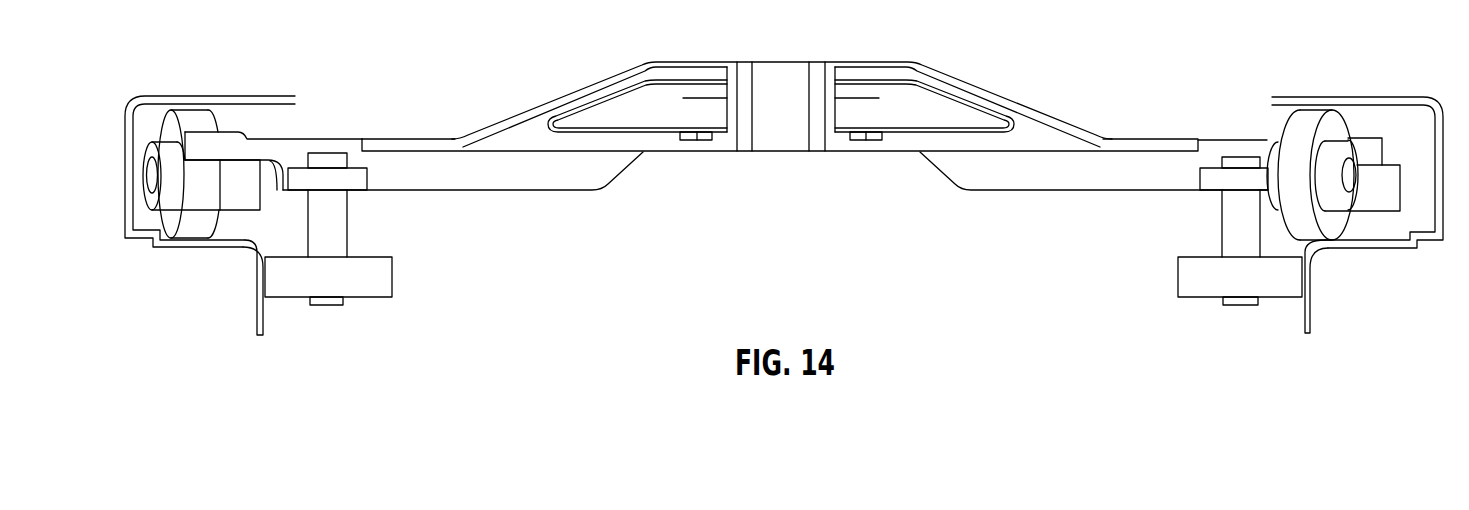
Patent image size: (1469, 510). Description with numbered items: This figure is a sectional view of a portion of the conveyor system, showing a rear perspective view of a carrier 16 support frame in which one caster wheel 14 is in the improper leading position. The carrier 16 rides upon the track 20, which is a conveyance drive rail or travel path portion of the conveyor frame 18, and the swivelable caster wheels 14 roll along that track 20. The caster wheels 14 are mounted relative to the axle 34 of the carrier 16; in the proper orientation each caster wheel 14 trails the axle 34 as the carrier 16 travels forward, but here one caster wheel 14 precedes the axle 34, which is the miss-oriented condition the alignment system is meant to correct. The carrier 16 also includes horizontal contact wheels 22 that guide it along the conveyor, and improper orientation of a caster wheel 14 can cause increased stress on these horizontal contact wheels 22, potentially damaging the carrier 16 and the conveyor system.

The caster wheel 14 is at (193, 121).
The carrier 16 is at (883, 93).
The frame 18 is at (256, 283).
The track 20 is at (193, 240).
The horizontal contact wheel 22 is at (307, 283).
The axle 34 is at (420, 150).